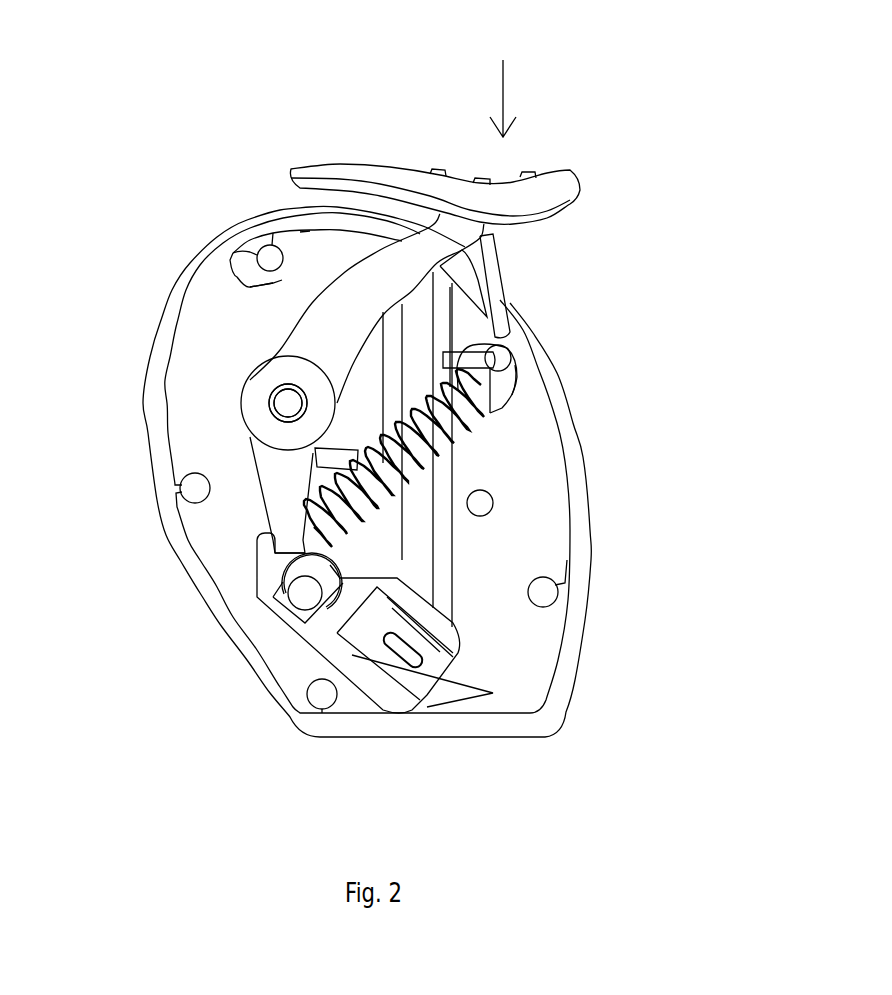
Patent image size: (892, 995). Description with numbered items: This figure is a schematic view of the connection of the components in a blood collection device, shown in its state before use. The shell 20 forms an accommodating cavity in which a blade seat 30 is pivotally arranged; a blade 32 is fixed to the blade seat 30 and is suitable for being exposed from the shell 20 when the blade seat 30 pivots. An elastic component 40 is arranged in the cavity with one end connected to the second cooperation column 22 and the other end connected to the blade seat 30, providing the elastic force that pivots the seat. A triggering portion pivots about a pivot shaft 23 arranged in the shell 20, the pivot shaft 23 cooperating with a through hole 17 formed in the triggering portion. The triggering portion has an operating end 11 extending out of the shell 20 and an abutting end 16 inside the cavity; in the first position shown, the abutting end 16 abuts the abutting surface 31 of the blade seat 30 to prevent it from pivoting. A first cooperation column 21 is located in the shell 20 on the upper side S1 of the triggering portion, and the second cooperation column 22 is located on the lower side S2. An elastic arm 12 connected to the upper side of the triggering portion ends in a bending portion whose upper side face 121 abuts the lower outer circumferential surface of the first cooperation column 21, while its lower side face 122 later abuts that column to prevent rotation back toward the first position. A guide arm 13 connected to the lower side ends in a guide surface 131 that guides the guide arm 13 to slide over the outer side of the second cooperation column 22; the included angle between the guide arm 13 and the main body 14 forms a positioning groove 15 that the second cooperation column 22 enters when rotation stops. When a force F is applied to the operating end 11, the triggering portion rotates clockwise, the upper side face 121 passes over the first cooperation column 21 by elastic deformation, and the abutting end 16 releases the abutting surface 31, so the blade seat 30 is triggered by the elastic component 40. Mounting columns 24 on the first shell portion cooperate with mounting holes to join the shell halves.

The operating end 11 is at (457, 183).
The elastic arm 12 is at (278, 275).
The upper side face 121 is at (240, 254).
The lower side face 122 is at (255, 283).
The guide arm 13 is at (487, 288).
The guide surface 131 is at (508, 336).
The main body 14 is at (435, 250).
The positioning groove 15 is at (462, 258).
The abutting end 16 is at (293, 540).
The through hole 17 is at (273, 403).
The shell 20 is at (532, 480).
The first cooperation column 21 is at (267, 260).
The second cooperation column 22 is at (500, 358).
The pivot shaft 23 is at (286, 405).
The mounting columns 24 is at (545, 592).
The blade seat 30 is at (335, 642).
The abutting surface 31 is at (258, 550).
The blade 32 is at (452, 673).
The elastic component 40 is at (398, 505).
The side S1 is at (300, 322).
The side S2 is at (502, 391).
The force F is at (503, 71).